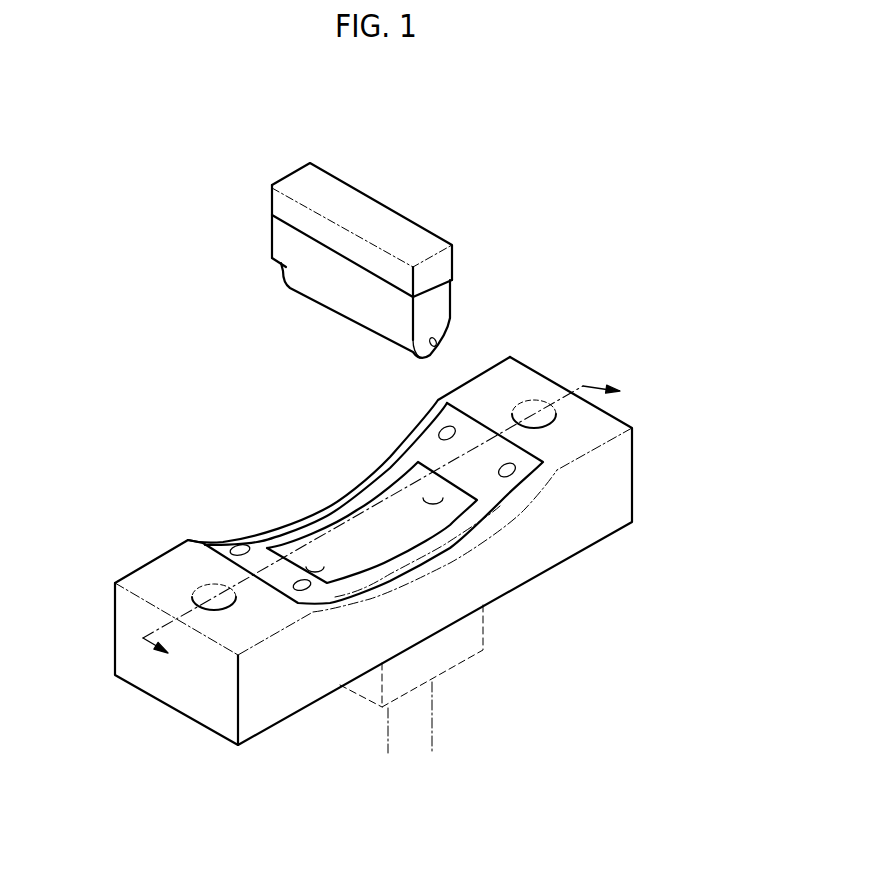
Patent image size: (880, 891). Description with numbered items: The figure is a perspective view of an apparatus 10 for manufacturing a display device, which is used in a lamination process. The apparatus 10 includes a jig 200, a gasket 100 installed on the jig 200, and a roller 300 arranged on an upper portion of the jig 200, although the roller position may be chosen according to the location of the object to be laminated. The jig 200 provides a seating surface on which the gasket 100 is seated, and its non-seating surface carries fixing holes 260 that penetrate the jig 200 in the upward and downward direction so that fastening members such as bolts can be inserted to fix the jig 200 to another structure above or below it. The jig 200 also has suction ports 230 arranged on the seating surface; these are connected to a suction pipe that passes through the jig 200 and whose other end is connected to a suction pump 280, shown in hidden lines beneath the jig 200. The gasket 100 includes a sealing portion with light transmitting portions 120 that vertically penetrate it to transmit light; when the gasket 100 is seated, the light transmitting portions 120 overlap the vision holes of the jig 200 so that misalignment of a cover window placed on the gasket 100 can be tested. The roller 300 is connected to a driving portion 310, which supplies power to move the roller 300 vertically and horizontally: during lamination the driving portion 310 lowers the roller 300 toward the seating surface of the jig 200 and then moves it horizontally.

The apparatus for manufacturing a display device 10 is at (412, 118).
The gasket 100 is at (409, 462).
The light transmitting portions 120 is at (514, 473).
The jig 200 is at (421, 543).
The suction ports 230 is at (313, 566).
The fixing holes 260 is at (537, 404).
The suction pump 280 is at (478, 630).
The roller 300 is at (445, 300).
The driving portion 310 is at (445, 262).